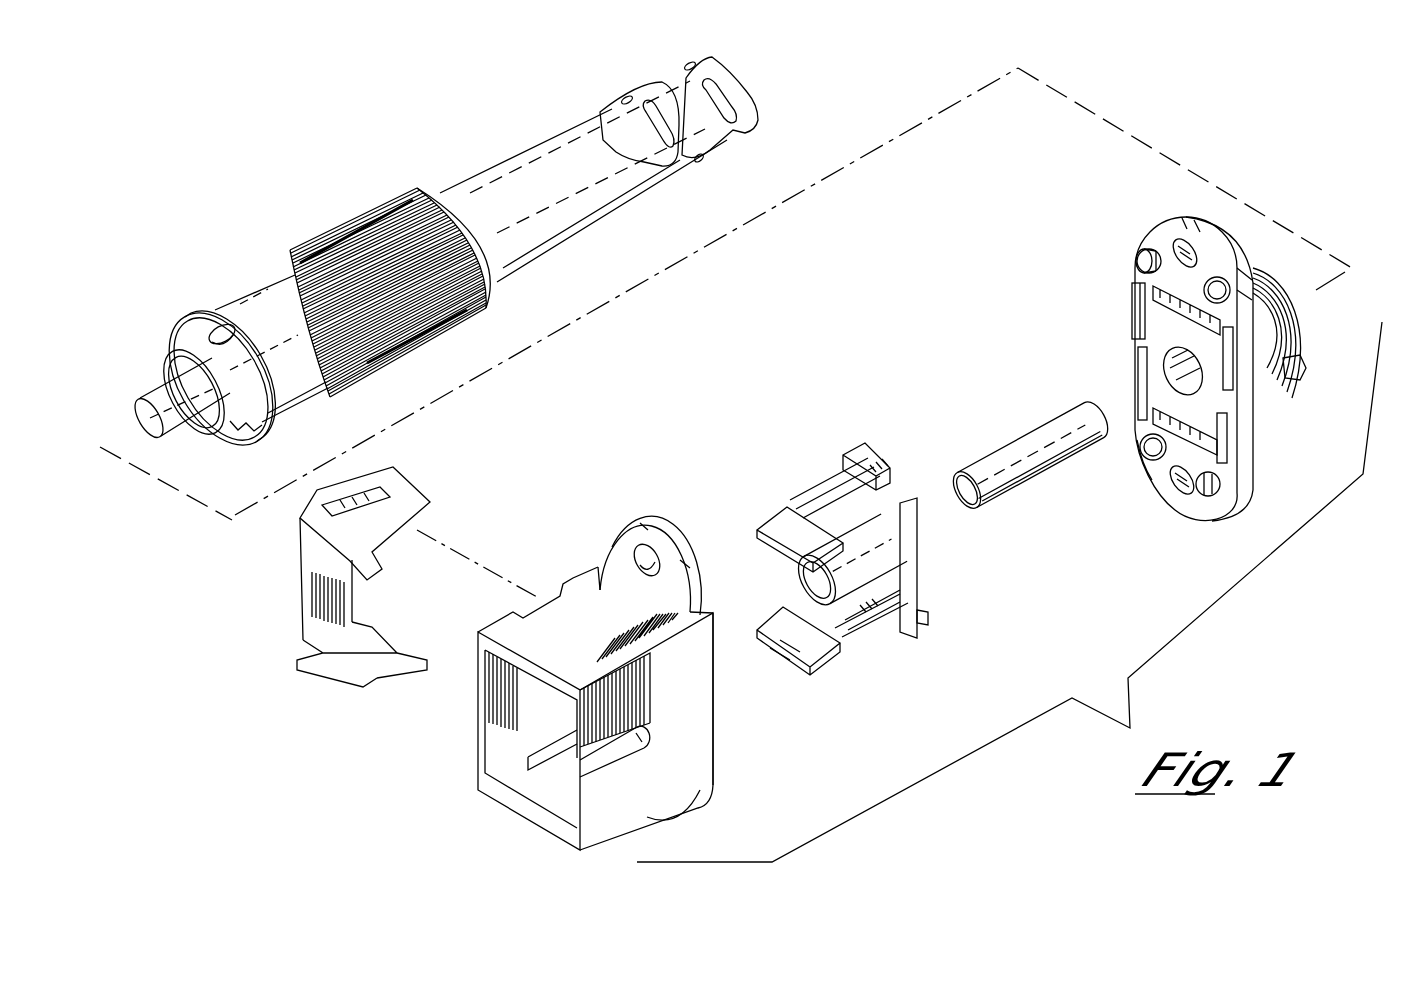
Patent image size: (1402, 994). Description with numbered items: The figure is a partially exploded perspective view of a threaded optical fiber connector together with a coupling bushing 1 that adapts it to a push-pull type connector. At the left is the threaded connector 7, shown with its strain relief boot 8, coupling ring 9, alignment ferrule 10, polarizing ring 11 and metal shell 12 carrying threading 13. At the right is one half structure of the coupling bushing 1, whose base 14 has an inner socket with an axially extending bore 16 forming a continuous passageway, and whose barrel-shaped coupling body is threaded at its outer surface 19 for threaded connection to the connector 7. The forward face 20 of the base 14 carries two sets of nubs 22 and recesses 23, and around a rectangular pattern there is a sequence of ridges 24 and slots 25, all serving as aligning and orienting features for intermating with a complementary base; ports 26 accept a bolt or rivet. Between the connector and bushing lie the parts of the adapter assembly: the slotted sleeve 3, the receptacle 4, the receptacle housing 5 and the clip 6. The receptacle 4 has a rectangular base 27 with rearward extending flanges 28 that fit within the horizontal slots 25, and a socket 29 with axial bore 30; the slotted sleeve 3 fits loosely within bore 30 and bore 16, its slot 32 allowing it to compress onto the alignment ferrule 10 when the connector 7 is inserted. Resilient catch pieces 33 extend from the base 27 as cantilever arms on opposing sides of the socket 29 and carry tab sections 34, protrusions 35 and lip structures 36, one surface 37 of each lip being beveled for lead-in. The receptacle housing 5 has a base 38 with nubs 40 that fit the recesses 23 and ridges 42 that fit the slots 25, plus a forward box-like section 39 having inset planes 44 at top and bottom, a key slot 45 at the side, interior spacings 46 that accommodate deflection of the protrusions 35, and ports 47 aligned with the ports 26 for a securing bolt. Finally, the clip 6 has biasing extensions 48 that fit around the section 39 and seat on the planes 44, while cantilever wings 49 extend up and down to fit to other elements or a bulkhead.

The coupling bushing 1 is at (1160, 215).
The slotted sleeve 3 is at (1010, 434).
The receptacle 4 is at (874, 448).
The receptacle housing 5 is at (606, 522).
The clip 6 is at (414, 477).
The threaded connector 7 is at (300, 220).
The strain relief boot 8 is at (567, 130).
The coupling ring 9 is at (413, 352).
The alignment ferrule 10 is at (152, 392).
The polarizing ring 11 is at (223, 324).
The metal shell 12 is at (186, 323).
The threading 13 is at (240, 436).
The base 14 is at (1138, 244).
The axially extending bore 16 is at (1180, 388).
The outer surface 19 is at (1264, 287).
The forward face 20 is at (1158, 476).
The nubs 22 is at (1140, 266).
The recesses 23 is at (1219, 281).
The ridges 24 is at (1131, 308).
The slots 25 is at (1197, 316).
The ports 26 is at (1146, 243).
The base 27 is at (918, 574).
The rearward extending flanges 28 is at (892, 468).
The socket 29 is at (866, 606).
The axial bore 30 is at (814, 581).
The slot 32 is at (1026, 481).
The resilient catch pieces 33 is at (840, 481).
The tab sections 34 is at (810, 497).
The protrusions 35 is at (780, 522).
The lip structures 36 is at (768, 624).
The beveled surface 37 is at (787, 636).
The base 38 is at (675, 541).
The box-like section 39 is at (613, 826).
The nubs 40 is at (714, 600).
The ridges 42 is at (717, 650).
The inset planes 44 is at (586, 605).
The key slot 45 is at (626, 761).
The spacings 46 is at (565, 757).
The ports 47 is at (656, 572).
The biasing extensions 48 is at (299, 522).
The wings 49 is at (420, 499).